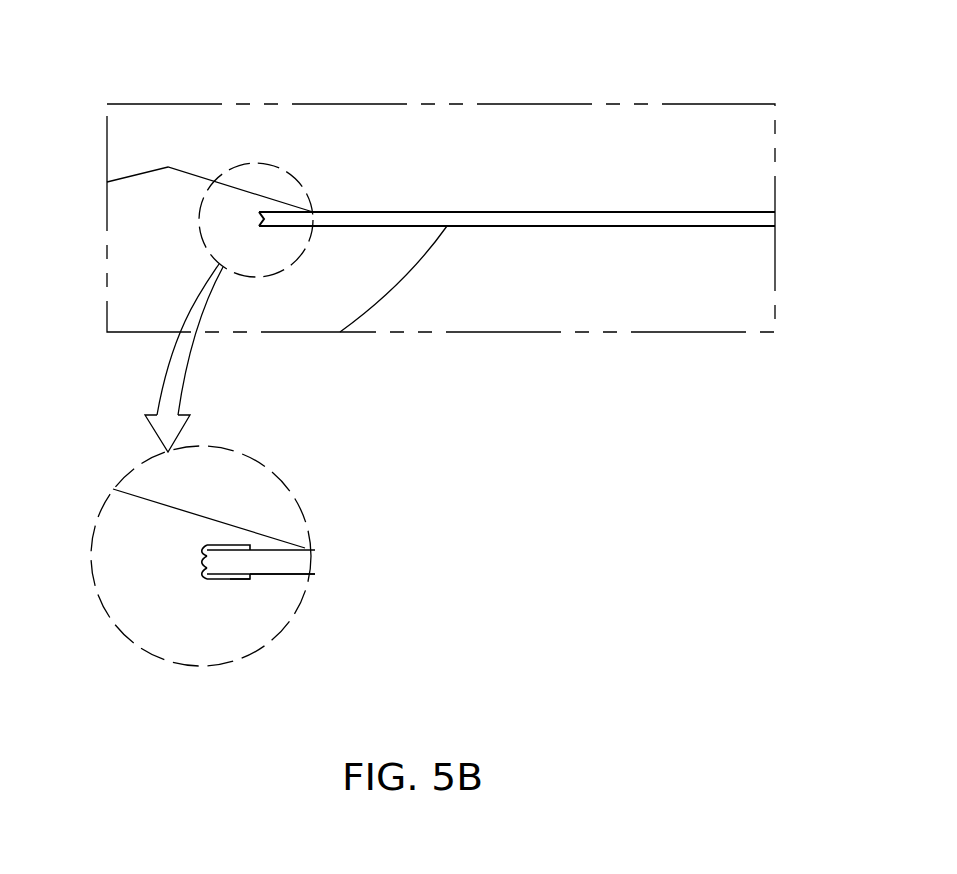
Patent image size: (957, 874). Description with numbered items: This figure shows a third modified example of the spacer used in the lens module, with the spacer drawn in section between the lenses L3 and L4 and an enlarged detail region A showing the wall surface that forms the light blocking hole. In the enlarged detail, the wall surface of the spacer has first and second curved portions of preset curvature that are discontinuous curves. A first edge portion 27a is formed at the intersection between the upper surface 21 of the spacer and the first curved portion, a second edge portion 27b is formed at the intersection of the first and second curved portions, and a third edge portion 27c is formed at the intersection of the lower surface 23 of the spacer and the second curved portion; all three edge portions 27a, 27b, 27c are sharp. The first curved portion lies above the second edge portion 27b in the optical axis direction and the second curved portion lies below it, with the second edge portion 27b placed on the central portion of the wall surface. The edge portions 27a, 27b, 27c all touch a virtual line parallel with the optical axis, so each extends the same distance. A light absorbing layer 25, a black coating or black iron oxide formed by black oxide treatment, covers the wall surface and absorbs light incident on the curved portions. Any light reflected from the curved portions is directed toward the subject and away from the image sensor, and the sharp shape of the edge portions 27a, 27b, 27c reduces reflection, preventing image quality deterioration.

The first length/region of frame L3 is at (474, 127).
The second length/region of frame L4 is at (613, 318).
The enlarged detail region A is at (466, 416).
The upper surface 21 is at (273, 549).
The lower surface 23 is at (278, 577).
The light absorbing layer 25 is at (238, 580).
The first edge portion 27a is at (207, 547).
The second edge portion 27b is at (203, 561).
The third edge portion 27c is at (208, 576).